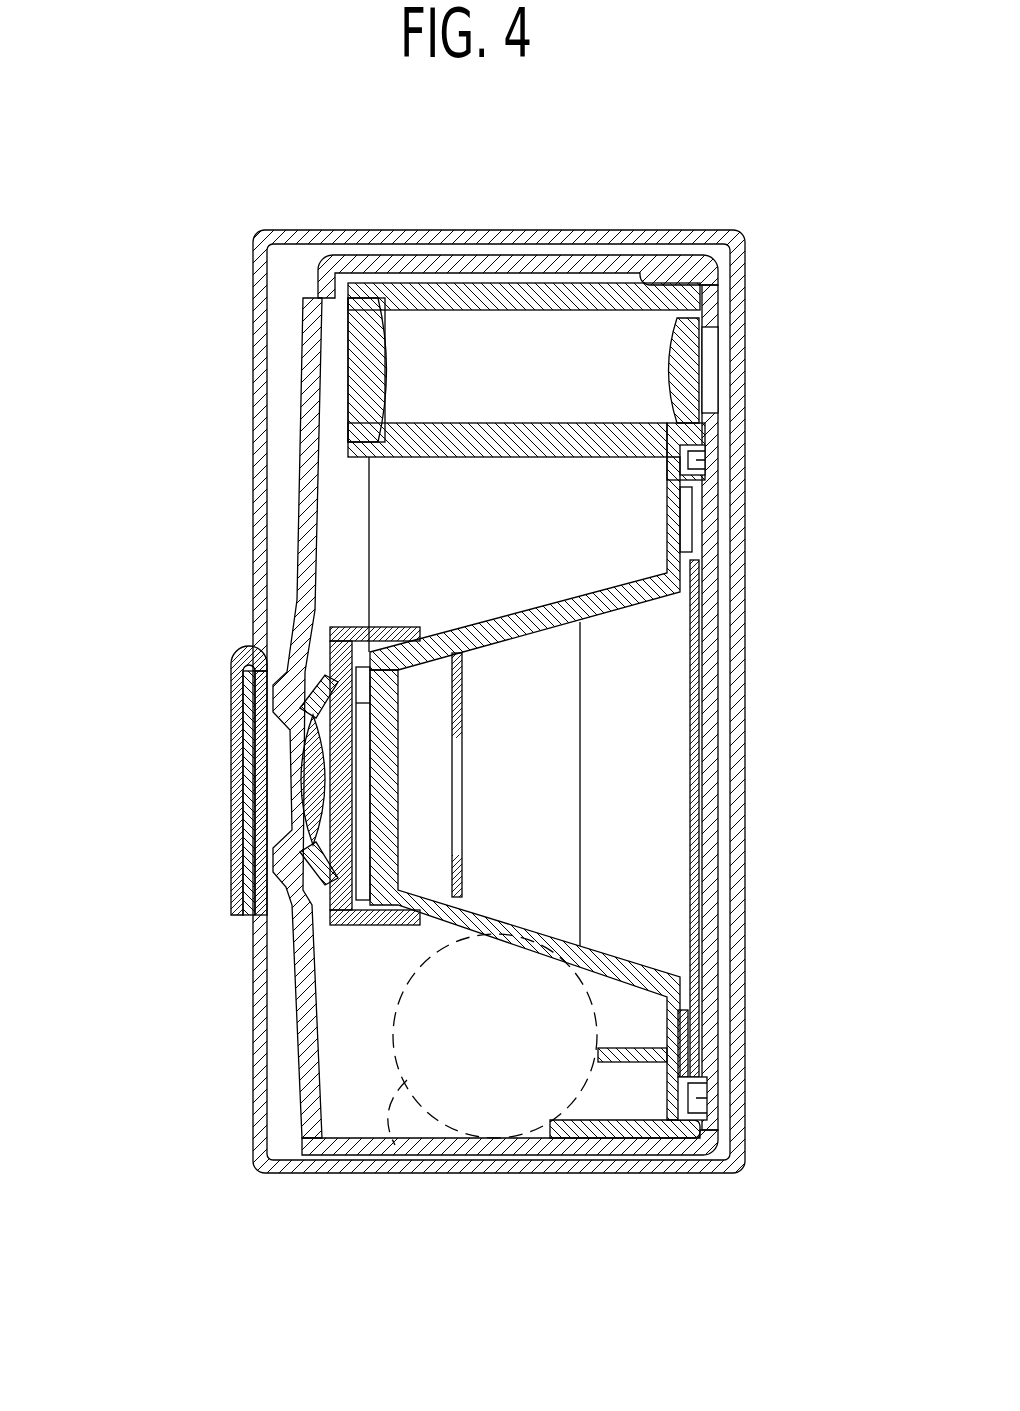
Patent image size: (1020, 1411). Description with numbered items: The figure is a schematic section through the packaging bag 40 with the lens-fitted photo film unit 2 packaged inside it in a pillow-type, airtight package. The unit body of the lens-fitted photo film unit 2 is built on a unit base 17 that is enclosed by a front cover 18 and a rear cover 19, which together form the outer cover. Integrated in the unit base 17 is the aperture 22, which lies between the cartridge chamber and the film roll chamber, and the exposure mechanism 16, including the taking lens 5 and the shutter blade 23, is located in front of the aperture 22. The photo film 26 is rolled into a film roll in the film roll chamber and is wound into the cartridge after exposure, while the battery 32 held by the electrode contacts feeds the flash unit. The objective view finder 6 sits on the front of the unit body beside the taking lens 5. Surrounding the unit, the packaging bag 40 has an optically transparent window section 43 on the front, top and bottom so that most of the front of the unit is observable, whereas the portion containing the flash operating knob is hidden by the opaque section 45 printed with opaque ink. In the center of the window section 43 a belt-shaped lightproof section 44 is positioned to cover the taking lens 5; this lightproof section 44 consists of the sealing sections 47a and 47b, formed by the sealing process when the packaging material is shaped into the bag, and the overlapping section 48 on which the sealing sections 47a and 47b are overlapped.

The lens-fitted photo film unit 2 is at (444, 733).
The taking lens 5 is at (316, 787).
The objective view finder 6 is at (354, 368).
The exposure mechanism 16 is at (346, 598).
The unit base 17 is at (597, 549).
The front cover 18 is at (310, 512).
The rear cover 19 is at (718, 727).
The aperture 22 is at (548, 613).
The shutter blade 23 is at (352, 920).
The photo film 26 is at (703, 905).
The battery 32 is at (407, 1176).
The packaging bag 40 is at (243, 328).
The window section 43 is at (251, 455).
The lightproof section 44 is at (157, 891).
The opaque section 45 is at (622, 240).
The sealing section 47a is at (232, 773).
The sealing section 47b is at (248, 905).
The overlapping section 48 is at (262, 900).